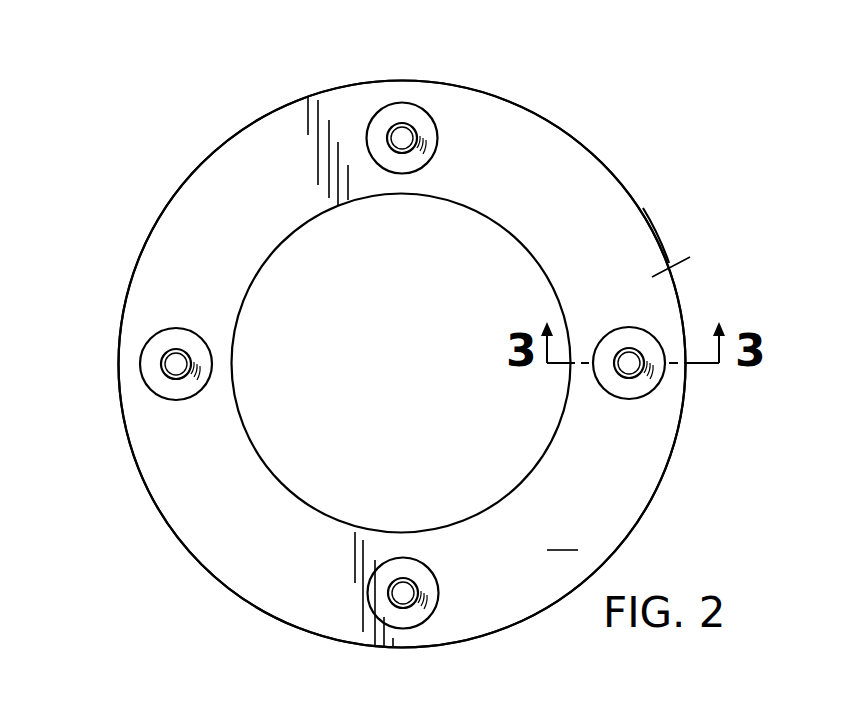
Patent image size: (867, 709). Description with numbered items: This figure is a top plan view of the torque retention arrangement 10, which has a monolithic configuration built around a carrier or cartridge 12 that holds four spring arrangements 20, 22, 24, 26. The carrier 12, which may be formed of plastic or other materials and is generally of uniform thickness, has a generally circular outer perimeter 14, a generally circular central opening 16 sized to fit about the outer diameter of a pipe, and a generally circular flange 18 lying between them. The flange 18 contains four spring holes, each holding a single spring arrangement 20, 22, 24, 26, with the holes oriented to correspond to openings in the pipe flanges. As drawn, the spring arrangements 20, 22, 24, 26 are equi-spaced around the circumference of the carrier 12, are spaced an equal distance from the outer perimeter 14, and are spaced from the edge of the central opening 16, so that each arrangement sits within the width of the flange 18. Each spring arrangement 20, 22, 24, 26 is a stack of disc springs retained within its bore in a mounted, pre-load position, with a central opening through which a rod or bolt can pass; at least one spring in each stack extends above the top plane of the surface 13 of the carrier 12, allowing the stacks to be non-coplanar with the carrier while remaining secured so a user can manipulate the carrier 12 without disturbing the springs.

The torque retention arrangement 10 is at (632, 146).
The carrier 12 is at (229, 137).
The surface 13 is at (565, 536).
The outer perimeter 14 is at (643, 208).
The central opening 16 is at (470, 208).
The flange 18 is at (652, 277).
The spring arrangement 20 is at (404, 105).
The spring arrangement 22 is at (633, 394).
The spring arrangement 24 is at (375, 603).
The spring arrangement 26 is at (150, 378).